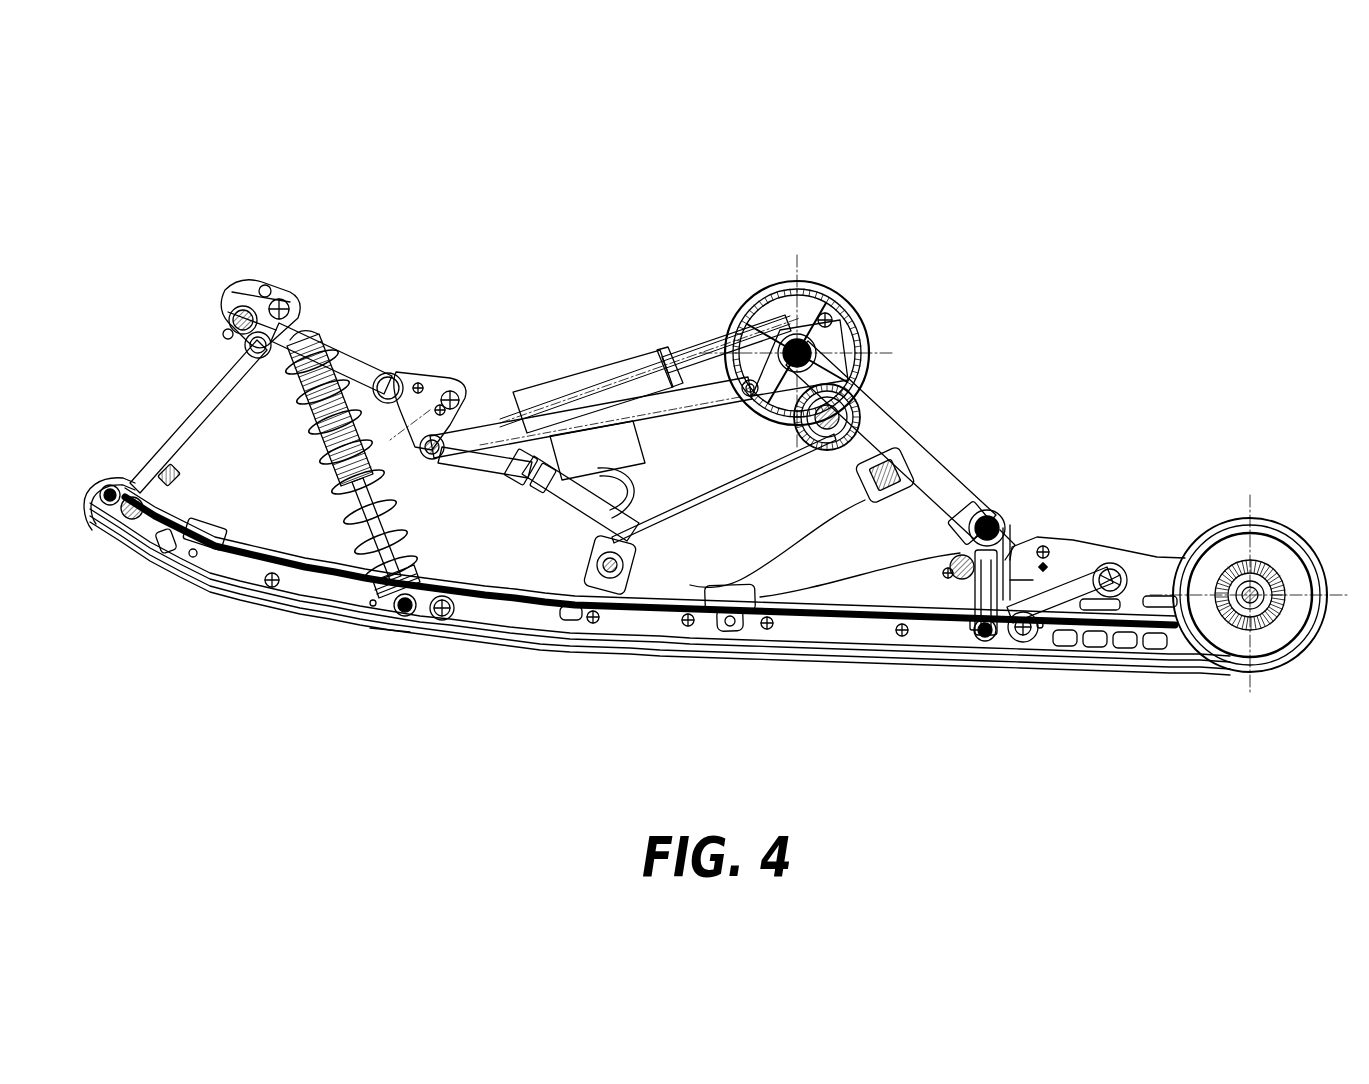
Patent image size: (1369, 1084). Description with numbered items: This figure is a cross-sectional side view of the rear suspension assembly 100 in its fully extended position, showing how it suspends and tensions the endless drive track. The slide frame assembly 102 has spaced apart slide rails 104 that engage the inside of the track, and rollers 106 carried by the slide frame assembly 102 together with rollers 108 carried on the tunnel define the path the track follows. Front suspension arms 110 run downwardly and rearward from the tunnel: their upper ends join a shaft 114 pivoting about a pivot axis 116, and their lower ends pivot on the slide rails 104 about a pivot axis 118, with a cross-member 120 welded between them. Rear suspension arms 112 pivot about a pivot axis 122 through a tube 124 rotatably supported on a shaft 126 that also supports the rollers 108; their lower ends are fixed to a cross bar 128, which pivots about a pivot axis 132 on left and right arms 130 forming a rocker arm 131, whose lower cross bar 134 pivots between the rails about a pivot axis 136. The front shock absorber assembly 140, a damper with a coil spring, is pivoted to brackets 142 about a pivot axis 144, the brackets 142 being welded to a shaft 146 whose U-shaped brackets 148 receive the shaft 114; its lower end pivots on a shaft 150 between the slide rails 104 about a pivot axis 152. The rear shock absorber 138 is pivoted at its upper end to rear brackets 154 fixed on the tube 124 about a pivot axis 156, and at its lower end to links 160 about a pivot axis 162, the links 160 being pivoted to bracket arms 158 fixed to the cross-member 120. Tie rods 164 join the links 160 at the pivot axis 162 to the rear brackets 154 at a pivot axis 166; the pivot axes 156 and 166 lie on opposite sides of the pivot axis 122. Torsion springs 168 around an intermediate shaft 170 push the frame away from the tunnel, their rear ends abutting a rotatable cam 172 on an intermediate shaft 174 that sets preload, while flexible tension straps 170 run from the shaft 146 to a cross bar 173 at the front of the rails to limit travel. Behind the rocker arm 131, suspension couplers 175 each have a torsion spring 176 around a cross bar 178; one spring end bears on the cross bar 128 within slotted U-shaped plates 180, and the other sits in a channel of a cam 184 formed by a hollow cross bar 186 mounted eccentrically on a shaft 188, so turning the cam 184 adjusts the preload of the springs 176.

The rear suspension assembly 100 is at (647, 278).
The slide frame assembly 102 is at (430, 662).
The slide rails 104 is at (218, 593).
The rollers 106 is at (1312, 555).
The rollers 108 is at (865, 330).
The front suspension arms 110 is at (353, 370).
The rear suspension arms 112 is at (948, 482).
The shaft 114 is at (247, 283).
The pivot axis 116 is at (227, 307).
The pivot axis 118 is at (635, 540).
The cross-member 120 is at (378, 376).
The pivot axis 122 is at (800, 312).
The tube 124 is at (790, 320).
The shaft 126 is at (825, 316).
The cross bar 128 is at (1008, 525).
The arms 130 is at (960, 637).
The rocker arm 131 is at (977, 637).
The pivot axis 132 is at (963, 540).
The cross bar 134 is at (980, 643).
The pivot axis 136 is at (1003, 643).
The rear shock absorber 138 is at (565, 390).
The front shock absorber assembly 140 is at (327, 480).
The brackets 142 is at (262, 285).
The pivot axis 144 is at (290, 293).
The shaft 146 is at (238, 340).
The U-shaped brackets 148 is at (220, 317).
The shaft 150 is at (395, 612).
The pivot axis 152 is at (388, 655).
The rear brackets 154 is at (760, 347).
The pivot axis 156 is at (853, 327).
The bracket arms 158 is at (412, 368).
The links 160 is at (428, 432).
The pivot axis 162 is at (453, 395).
The tie rods 164 is at (590, 413).
The pivot axis 166 is at (740, 333).
The torsion springs 168 is at (858, 395).
The intermediate shaft 170 is at (183, 445).
The rotatable cam 172 is at (858, 498).
The cross bar 173 is at (127, 533).
The intermediate shaft 174 is at (805, 500).
The suspension couplers 175 is at (1055, 680).
The torsion spring 176 is at (1020, 643).
The cross bar 178 is at (1080, 650).
The U-shaped plates 180 is at (1010, 521).
The cam 184 is at (1113, 562).
The cross bar 186 is at (1127, 572).
The shaft 188 is at (1130, 580).